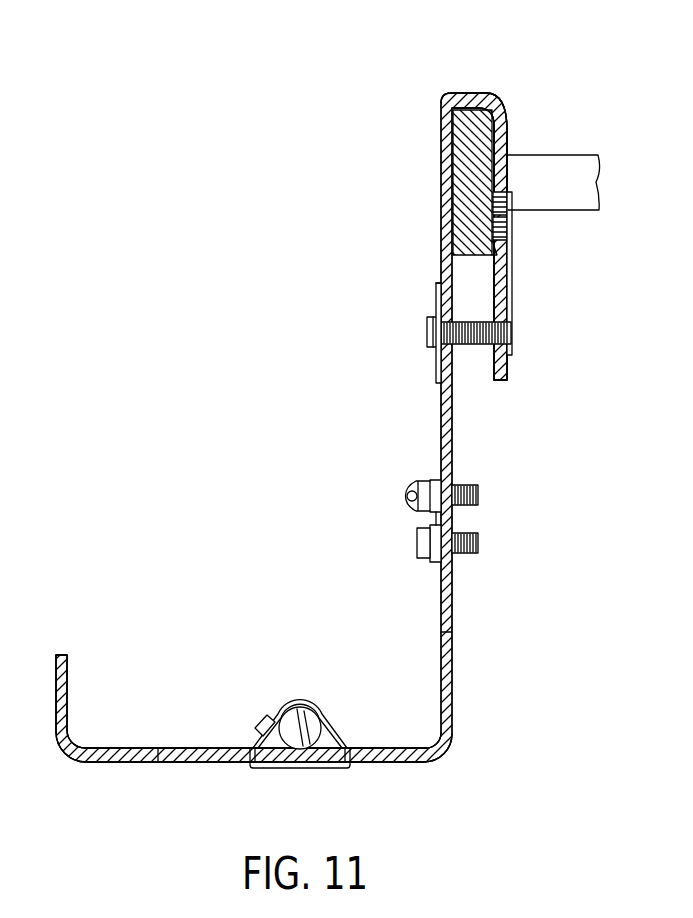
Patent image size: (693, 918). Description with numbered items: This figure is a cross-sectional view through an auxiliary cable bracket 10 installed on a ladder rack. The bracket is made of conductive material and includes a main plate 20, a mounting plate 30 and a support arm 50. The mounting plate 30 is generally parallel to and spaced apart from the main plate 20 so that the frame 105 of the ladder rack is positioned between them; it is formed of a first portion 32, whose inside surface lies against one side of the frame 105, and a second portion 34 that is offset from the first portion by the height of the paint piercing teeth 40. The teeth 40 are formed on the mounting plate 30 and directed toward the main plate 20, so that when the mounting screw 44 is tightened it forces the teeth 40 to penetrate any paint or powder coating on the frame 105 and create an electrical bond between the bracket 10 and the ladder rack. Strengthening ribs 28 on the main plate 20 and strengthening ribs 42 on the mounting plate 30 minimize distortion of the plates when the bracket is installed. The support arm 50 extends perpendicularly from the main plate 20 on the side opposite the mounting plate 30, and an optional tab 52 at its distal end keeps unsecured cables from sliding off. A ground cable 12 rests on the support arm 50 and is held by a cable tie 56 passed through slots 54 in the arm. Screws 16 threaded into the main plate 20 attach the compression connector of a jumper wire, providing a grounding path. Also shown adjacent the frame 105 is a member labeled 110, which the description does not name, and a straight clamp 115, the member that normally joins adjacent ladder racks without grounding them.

The auxiliary cable bracket 10 is at (432, 430).
The ground cable 12 is at (305, 704).
The screws 16 is at (480, 495).
The main plate 20 is at (450, 450).
The strengthening ribs 28 is at (436, 363).
The mounting plate 30 is at (506, 141).
The first portion 32 is at (497, 108).
The second portion 34 is at (501, 298).
The paint piercing teeth 40 is at (507, 200).
The strengthening ribs 42 is at (512, 275).
The mounting screw 44 is at (427, 327).
The support arm 50 is at (120, 763).
The tab 52 is at (68, 680).
The slots 54 is at (158, 748).
The cable tie 56 is at (340, 720).
The frame 105 is at (440, 173).
The panel 110 is at (546, 163).
The straight clamp 115 is at (437, 283).